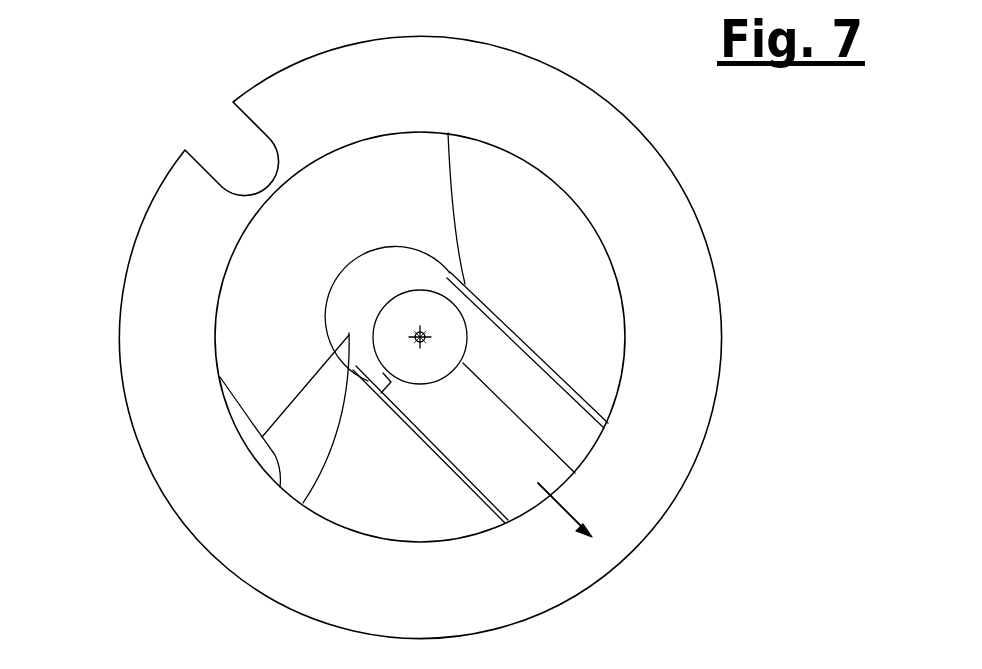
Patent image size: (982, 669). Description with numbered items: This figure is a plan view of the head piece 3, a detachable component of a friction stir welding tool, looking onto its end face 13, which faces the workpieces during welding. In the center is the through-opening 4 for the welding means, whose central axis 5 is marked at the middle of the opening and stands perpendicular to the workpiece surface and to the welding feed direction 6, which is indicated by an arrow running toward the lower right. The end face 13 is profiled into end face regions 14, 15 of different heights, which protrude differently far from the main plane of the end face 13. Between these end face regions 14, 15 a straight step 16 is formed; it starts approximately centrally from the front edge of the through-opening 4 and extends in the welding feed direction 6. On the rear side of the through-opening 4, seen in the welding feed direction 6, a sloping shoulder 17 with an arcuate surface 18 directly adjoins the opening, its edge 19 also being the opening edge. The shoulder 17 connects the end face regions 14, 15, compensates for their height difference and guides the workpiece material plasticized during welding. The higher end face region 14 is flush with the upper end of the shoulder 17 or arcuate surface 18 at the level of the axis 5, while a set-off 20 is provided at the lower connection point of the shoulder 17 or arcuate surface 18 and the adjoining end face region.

The head piece 3 is at (168, 243).
The through-opening 4 is at (423, 307).
The central axis 5 is at (424, 333).
The welding feed direction 6 is at (562, 517).
The end face 13 is at (375, 337).
The higher end face region 14 is at (523, 382).
The end face region 15 is at (484, 462).
The straight step 16 is at (553, 452).
The sloping shoulder 17 is at (374, 302).
The arcuate surface 18 is at (375, 295).
The edge 19 is at (375, 322).
The set-off 20 is at (388, 387).